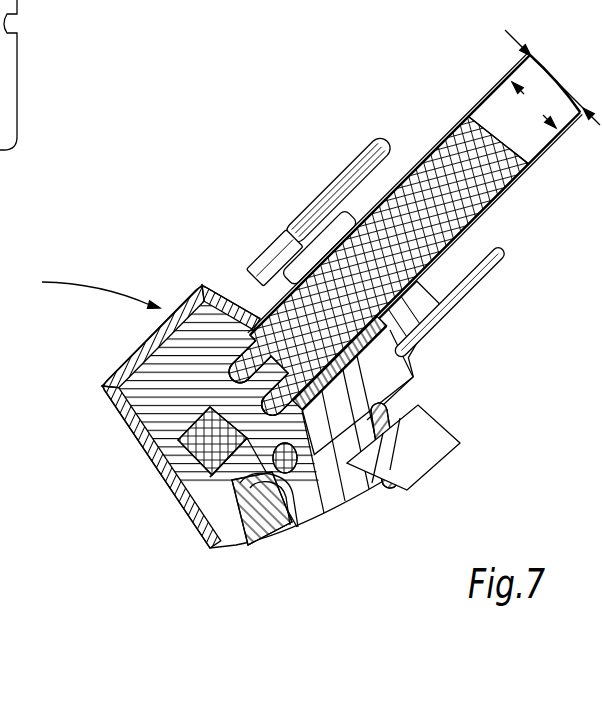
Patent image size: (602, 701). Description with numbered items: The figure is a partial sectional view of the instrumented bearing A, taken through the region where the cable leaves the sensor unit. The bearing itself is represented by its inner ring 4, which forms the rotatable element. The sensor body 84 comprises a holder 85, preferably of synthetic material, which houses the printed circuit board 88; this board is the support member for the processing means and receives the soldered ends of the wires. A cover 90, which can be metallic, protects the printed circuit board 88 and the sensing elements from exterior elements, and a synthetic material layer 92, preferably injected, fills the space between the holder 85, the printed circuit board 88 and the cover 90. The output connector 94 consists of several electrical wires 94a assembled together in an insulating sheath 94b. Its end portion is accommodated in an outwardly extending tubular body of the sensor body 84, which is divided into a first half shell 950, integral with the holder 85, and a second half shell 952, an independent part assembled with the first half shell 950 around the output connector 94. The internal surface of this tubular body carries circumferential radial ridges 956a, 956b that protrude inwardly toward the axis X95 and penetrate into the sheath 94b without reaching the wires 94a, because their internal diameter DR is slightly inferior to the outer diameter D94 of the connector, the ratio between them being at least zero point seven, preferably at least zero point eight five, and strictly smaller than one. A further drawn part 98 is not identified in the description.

The inner ring 4 is at (422, 463).
The sensor body 84 is at (267, 520).
The holder 85 is at (323, 497).
The printed circuit board 88 is at (212, 475).
The cover 90 is at (137, 367).
The synthetic material layer 92 is at (153, 390).
The output connector 94 is at (506, 200).
The electrical wires 94a is at (240, 365).
The insulating sheath 94b is at (452, 143).
The cover 98 is at (473, 292).
The first half shell 950 is at (430, 340).
The second half shell 952 is at (257, 267).
The radial ridge 956a is at (305, 250).
The radial ridge 956b is at (378, 193).
The axis of the tubular body X95 is at (250, 380).
The outer diameter of the output connector D94 is at (552, 77).
The internal diameter of the radial ridges DR is at (534, 105).
The instrumented bearing A is at (93, 288).